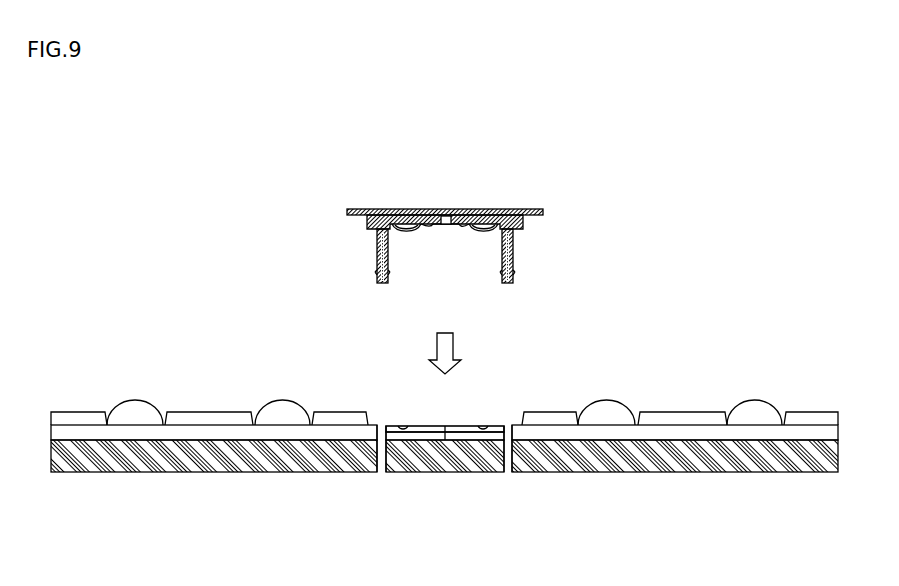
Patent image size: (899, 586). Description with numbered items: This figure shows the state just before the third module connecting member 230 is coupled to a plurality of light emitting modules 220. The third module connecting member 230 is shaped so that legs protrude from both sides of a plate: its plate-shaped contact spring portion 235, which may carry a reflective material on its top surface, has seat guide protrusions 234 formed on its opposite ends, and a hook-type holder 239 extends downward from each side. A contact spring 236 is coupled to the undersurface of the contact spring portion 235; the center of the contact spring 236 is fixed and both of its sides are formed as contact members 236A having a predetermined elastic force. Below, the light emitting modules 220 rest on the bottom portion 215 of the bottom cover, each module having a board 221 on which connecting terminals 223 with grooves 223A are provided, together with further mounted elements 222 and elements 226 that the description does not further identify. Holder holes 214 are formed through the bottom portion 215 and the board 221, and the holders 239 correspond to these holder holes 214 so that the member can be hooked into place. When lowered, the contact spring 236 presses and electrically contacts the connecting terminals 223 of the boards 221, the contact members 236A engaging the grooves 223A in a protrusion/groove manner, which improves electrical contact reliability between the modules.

The third module connecting member 230 is at (426, 212).
The seat guide protrusion 234 is at (347, 211).
The contact spring portion 235 is at (377, 213).
The contact spring 236 is at (413, 210).
The contact member 236A is at (404, 232).
The holder 239 is at (377, 256).
The light emitting module 220 is at (444, 418).
The board 221 is at (816, 432).
The light emitting element 222 is at (755, 400).
The electrode pattern 226 is at (690, 420).
The connecting terminal 223 is at (460, 426).
The groove 223A is at (486, 427).
The holder hole 214 is at (381, 474).
The bottom portion 215 is at (755, 463).